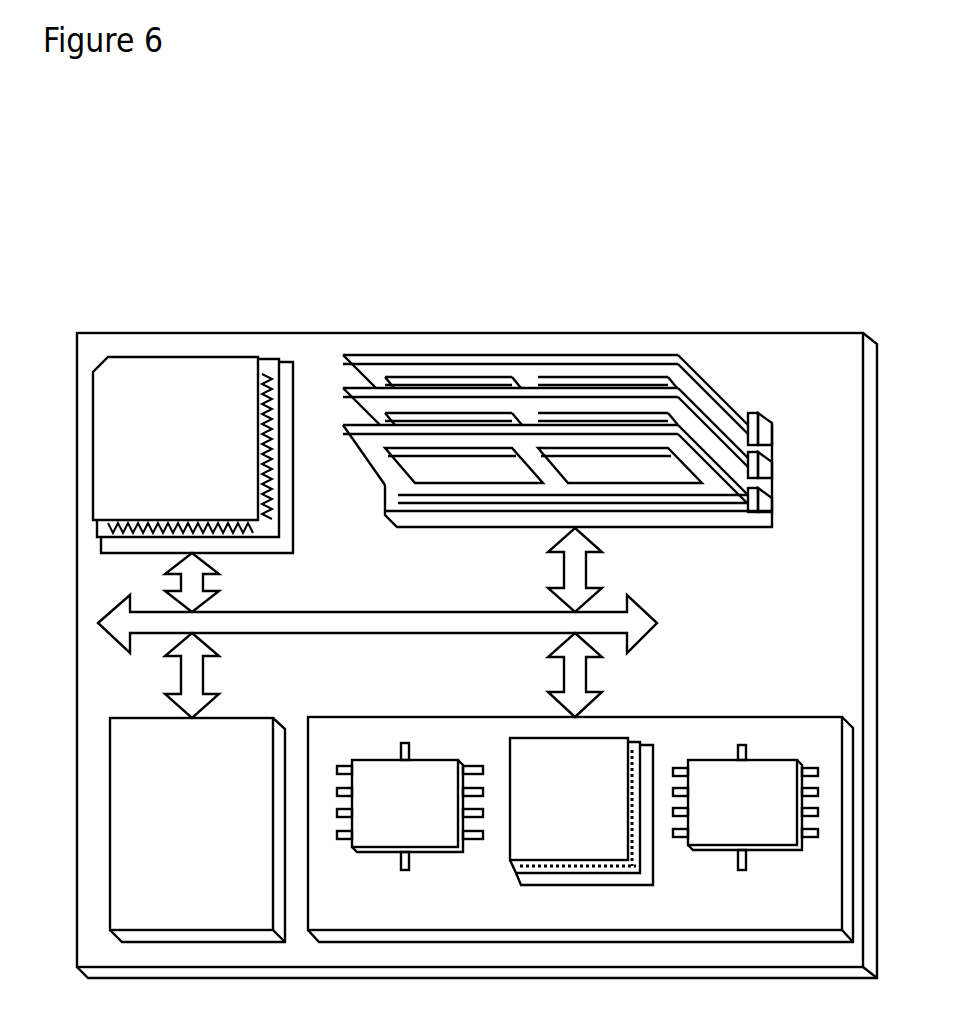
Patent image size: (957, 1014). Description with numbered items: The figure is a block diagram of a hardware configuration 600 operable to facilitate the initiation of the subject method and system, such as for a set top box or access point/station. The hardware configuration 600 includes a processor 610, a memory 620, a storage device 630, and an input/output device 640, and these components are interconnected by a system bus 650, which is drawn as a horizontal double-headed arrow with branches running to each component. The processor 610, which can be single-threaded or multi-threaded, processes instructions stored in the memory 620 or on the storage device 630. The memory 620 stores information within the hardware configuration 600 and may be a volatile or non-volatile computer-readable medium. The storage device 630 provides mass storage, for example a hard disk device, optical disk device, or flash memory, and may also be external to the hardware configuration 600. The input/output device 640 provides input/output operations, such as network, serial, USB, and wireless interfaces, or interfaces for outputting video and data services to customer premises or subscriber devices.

The hardware configuration 600 is at (335, 218).
The processor 610 is at (212, 498).
The memory 620 is at (735, 403).
The storage device 630 is at (223, 909).
The input/output device 640 is at (797, 718).
The system bus 650 is at (373, 635).